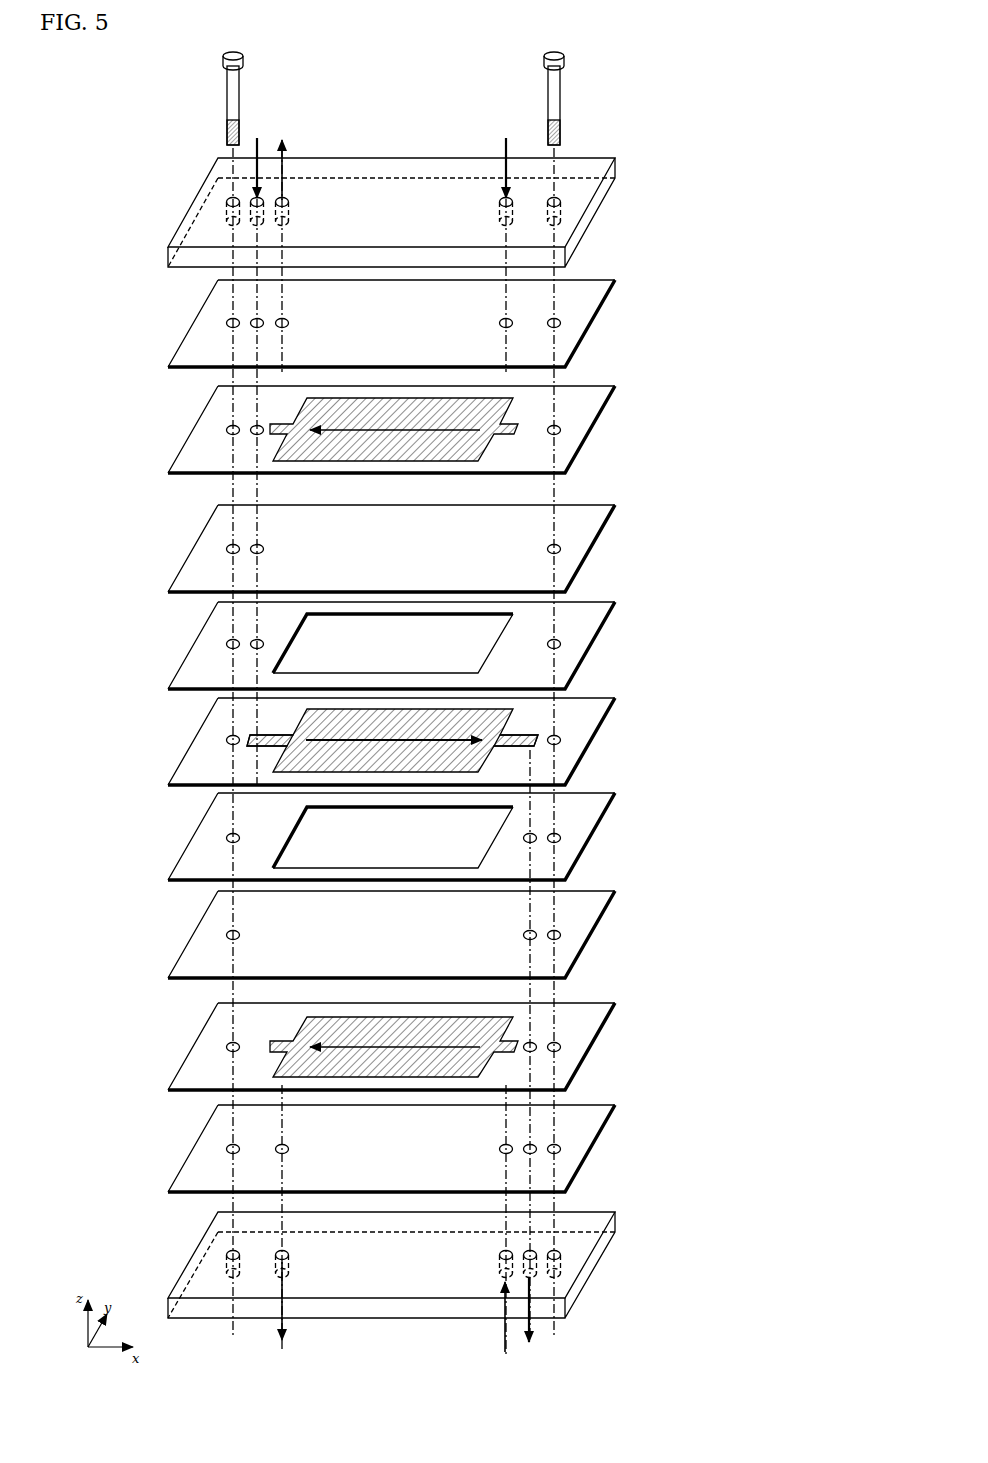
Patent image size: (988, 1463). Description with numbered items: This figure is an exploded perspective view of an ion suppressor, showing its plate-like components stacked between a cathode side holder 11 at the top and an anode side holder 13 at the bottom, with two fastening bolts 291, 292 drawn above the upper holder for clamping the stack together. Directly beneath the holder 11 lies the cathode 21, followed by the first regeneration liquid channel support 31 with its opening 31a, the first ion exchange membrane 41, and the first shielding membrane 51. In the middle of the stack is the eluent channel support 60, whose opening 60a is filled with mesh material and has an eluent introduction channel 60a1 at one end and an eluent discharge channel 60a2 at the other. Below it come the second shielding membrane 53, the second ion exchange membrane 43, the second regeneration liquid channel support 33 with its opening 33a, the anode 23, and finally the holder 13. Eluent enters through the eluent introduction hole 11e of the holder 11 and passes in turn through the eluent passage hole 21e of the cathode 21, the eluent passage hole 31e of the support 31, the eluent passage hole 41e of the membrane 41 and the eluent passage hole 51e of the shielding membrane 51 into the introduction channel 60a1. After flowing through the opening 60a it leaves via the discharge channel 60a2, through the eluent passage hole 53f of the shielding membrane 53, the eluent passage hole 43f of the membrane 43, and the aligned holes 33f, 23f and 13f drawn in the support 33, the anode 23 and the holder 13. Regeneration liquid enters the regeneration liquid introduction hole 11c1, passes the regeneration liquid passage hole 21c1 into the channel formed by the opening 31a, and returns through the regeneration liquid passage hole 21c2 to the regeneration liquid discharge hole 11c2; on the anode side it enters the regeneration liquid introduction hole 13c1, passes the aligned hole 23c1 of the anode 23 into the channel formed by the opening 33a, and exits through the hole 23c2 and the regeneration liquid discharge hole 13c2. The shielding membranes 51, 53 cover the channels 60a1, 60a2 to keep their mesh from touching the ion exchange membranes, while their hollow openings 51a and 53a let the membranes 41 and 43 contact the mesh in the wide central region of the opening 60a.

The screw 291 is at (238, 87).
The screw 292 is at (559, 87).
The cathode side holder 11 is at (590, 211).
The eluent introduction hole 11e is at (250, 199).
The regeneration liquid introduction hole 11c1 is at (497, 202).
The regeneration liquid discharge hole 11c2 is at (291, 202).
The cathode 21 is at (582, 317).
The eluent passage hole 21e is at (250, 320).
The regeneration liquid passage hole 21c1 is at (497, 324).
The regeneration liquid passage hole 21c2 is at (291, 323).
The first regeneration liquid channel support 31 is at (580, 430).
The eluent passage hole 31e is at (250, 427).
The opening 31a is at (488, 420).
The first ion exchange membrane 41 is at (582, 551).
The eluent passage hole 41e is at (250, 546).
The first shielding membrane 51 is at (582, 640).
The eluent passage hole 51e is at (250, 641).
The opening 51a is at (482, 638).
The eluent channel support 60 is at (582, 744).
The opening 60a is at (332, 726).
The eluent introduction channel 60a1 is at (278, 739).
The eluent discharge channel 60a2 is at (508, 738).
The second shielding membrane 53 is at (582, 832).
The eluent passage hole 53f is at (536, 835).
The opening 53a is at (310, 845).
The second ion exchange membrane 43 is at (582, 937).
The eluent passage hole 43f is at (536, 932).
The second regeneration liquid channel support 33 is at (582, 1047).
The through hole of plate 33 33f is at (536, 1044).
The opening 33a is at (322, 1025).
The anode 23 is at (582, 1145).
The through hole of plate 23 23f is at (536, 1146).
The flow hole of plate 23 23c1 is at (291, 1150).
The flow hole of plate 23 23c2 is at (497, 1150).
The anode side holder 13 is at (590, 1265).
The through hole of end plate 13 13f is at (536, 1252).
The regeneration liquid introduction hole 13c1 is at (291, 1255).
The regeneration liquid discharge hole 13c2 is at (497, 1255).